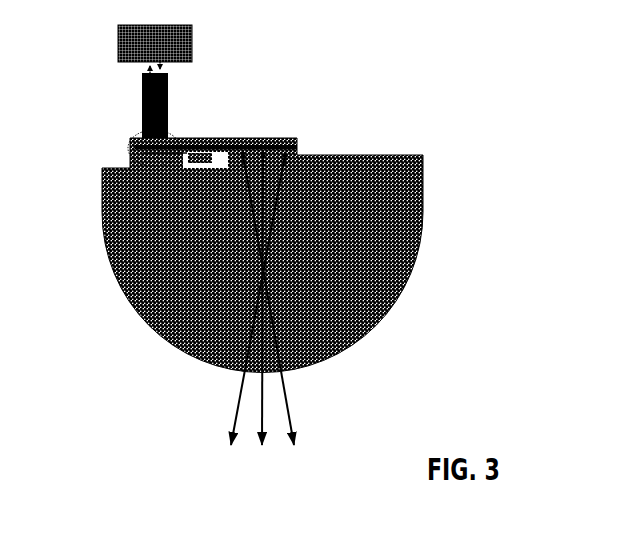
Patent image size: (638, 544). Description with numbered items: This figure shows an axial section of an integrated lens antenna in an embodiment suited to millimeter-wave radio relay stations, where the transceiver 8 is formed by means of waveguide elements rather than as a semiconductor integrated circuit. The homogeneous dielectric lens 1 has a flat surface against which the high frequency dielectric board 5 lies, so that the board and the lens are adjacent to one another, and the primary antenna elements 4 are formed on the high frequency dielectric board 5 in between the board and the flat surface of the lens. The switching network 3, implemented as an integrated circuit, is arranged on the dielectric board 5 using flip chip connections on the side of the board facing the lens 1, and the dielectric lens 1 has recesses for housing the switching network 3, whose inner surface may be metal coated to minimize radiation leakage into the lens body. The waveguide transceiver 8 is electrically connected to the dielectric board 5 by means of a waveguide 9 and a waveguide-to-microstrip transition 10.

The homogeneous dielectric lens 1 is at (115, 280).
The switching network 3 is at (200, 151).
The primary antenna elements 4 is at (252, 140).
The high frequency dielectric board 5 is at (299, 147).
The transceiver 8 is at (117, 43).
The waveguide 9 is at (141, 112).
The waveguide-to-microstrip transition 10 is at (121, 142).